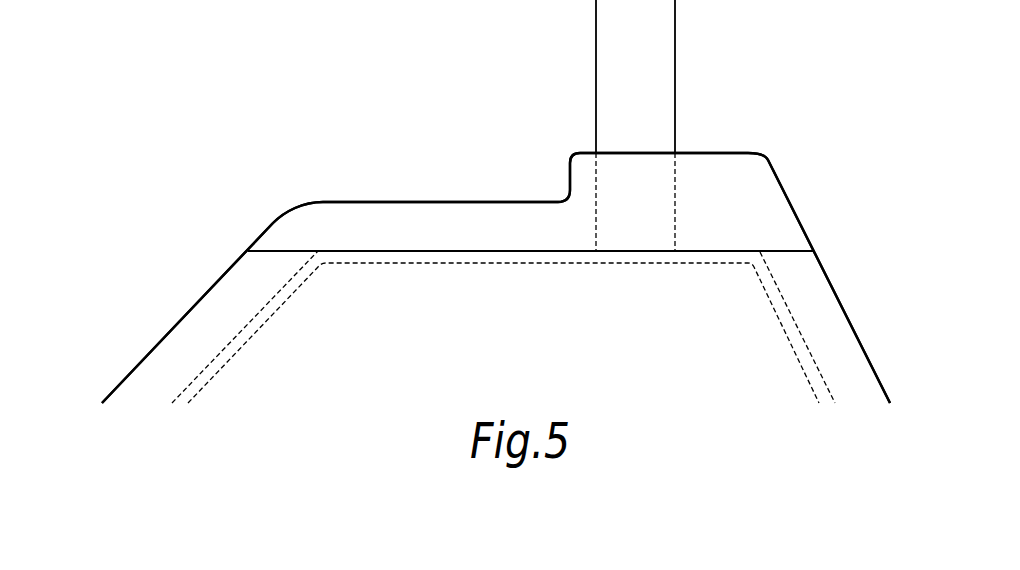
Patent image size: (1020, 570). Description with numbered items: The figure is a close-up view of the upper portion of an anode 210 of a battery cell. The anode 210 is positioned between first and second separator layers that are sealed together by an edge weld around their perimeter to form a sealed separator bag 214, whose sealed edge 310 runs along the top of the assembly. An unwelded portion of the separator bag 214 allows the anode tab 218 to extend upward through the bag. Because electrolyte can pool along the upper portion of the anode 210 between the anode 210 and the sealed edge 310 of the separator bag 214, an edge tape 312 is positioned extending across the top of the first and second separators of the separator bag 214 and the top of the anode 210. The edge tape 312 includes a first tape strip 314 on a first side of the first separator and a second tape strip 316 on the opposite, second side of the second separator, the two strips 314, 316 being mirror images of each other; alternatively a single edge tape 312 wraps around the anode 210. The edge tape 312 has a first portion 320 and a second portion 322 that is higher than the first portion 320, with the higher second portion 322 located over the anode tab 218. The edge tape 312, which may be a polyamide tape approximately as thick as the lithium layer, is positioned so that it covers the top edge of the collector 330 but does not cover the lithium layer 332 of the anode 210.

The anode 210 is at (822, 218).
The separator bag 214 is at (245, 280).
The anode tab 218 is at (677, 53).
The sealed edge 310 is at (273, 222).
The edge tape 312 is at (330, 212).
The first tape strip 314 is at (777, 193).
The second tape strip 316 is at (767, 157).
The first portion 320 is at (449, 200).
The second portion 322 is at (745, 126).
The collector 330 is at (257, 340).
The lithium layer 332 is at (213, 385).